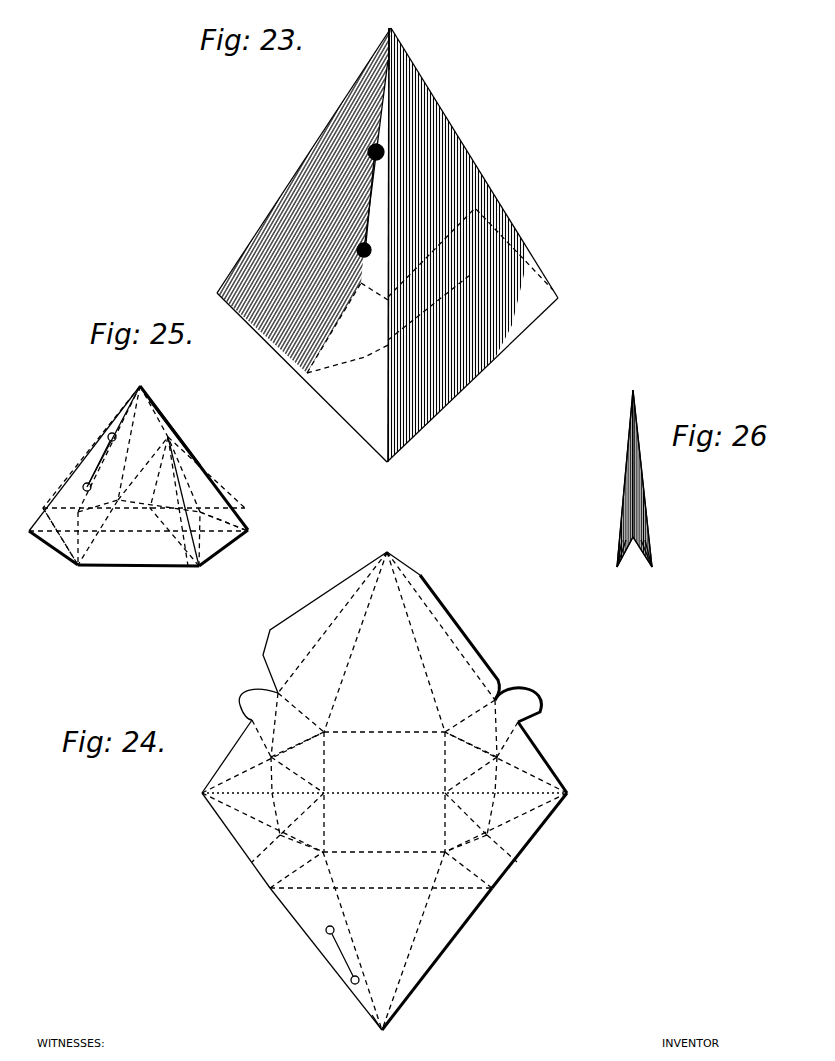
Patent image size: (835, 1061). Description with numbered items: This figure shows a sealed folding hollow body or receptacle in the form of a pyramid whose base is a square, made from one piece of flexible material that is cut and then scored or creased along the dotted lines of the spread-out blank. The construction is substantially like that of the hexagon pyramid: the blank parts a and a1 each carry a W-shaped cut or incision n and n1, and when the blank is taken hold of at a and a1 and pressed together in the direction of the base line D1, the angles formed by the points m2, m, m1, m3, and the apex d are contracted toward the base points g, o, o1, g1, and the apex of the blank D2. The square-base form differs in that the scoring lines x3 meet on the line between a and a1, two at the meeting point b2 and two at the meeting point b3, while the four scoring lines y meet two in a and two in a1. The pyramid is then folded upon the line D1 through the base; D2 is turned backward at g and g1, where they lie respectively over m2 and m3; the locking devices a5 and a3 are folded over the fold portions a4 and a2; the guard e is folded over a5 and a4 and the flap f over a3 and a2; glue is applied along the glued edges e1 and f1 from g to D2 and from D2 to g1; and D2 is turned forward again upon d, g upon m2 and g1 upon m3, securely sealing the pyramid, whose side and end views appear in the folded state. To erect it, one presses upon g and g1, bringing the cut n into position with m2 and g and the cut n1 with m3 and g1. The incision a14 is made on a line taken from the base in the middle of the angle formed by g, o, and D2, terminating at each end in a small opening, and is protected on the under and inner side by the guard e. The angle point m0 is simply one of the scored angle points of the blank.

In FIG. 23, the apex d is at (376, 47).
In FIG. 25, the apex d is at (84, 449).
In FIG. 26, the apex d is at (618, 475).
In FIG. 24, the apex d is at (386, 628).
In FIG. 23, the apex of the blank D2 is at (474, 162).
In FIG. 25, the apex of the blank D2 is at (194, 451).
In FIG. 26, the apex of the blank D2 is at (636, 392).
In FIG. 24, the apex of the blank D2 is at (384, 1036).
In FIG. 23, the fold line through the base D1 is at (373, 283).
In FIG. 25, the fold line through the base D1 is at (145, 521).
In FIG. 26, the fold line through the base D1 is at (633, 508).
In FIG. 24, the fold line through the base D1 is at (384, 782).
In FIG. 23, the angle point m is at (216, 294).
In FIG. 25, the angle point m is at (129, 575).
In FIG. 26, the angle point m is at (602, 562).
In FIG. 24, the angle point m is at (384, 781).
In FIG. 23, the angle point m1 is at (390, 128).
In FIG. 25, the angle point m1 is at (172, 486).
In FIG. 26, the angle point m1 is at (619, 562).
In FIG. 24, the angle point m2 is at (297, 716).
In FIG. 24, the angle point m3 is at (471, 719).
In FIG. 24, the fold point m0 is at (440, 781).
In FIG. 23, the base point o is at (383, 259).
In FIG. 25, the base point o is at (109, 485).
In FIG. 26, the base point o is at (648, 562).
In FIG. 24, the base point o is at (384, 932).
In FIG. 23, the base point o1 is at (484, 376).
In FIG. 25, the base point o1 is at (198, 506).
In FIG. 26, the base point o1 is at (659, 562).
In FIG. 24, the base point o1 is at (413, 932).
In FIG. 23, the base point g is at (302, 372).
In FIG. 25, the base point g is at (129, 545).
In FIG. 26, the base point g is at (641, 546).
In FIG. 24, the base point g is at (373, 876).
In FIG. 23, the base point g1 is at (474, 207).
In FIG. 25, the base point g1 is at (235, 543).
In FIG. 26, the base point g1 is at (655, 552).
In FIG. 24, the base point g1 is at (479, 883).
In FIG. 25, the blank part a is at (109, 436).
In FIG. 24, the blank part a is at (214, 762).
In FIG. 25, the blank part a1 is at (176, 433).
In FIG. 24, the blank part a1 is at (555, 763).
In FIG. 25, the fold portion a2 is at (219, 481).
In FIG. 24, the fold portion a2 is at (529, 840).
In FIG. 25, the locking device a3 is at (228, 510).
In FIG. 24, the locking device a3 is at (538, 700).
In FIG. 25, the fold portion a4 is at (134, 514).
In FIG. 24, the fold portion a4 is at (236, 840).
In FIG. 25, the locking device a5 is at (85, 475).
In FIG. 24, the locking device a5 is at (249, 718).
In FIG. 23, the incision a14 is at (384, 150).
In FIG. 25, the incision a14 is at (111, 433).
In FIG. 24, the incision a14 is at (351, 983).
In FIG. 25, the meeting point b2 is at (109, 475).
In FIG. 24, the meeting point b2 is at (297, 775).
In FIG. 25, the meeting point b3 is at (146, 472).
In FIG. 24, the meeting point b3 is at (471, 776).
In FIG. 25, the W-shaped cut n is at (134, 511).
In FIG. 24, the W-shaped cut n is at (308, 805).
In FIG. 25, the W-shaped cut n1 is at (180, 501).
In FIG. 24, the W-shaped cut n1 is at (457, 805).
In FIG. 24, the guard e is at (313, 612).
In FIG. 24, the glued edge e1 is at (326, 959).
In FIG. 24, the flap f is at (443, 626).
In FIG. 24, the glued edge f1 is at (437, 959).
In FIG. 24, the scoring lines x3 is at (384, 792).
In FIG. 24, the scoring lines y is at (384, 797).